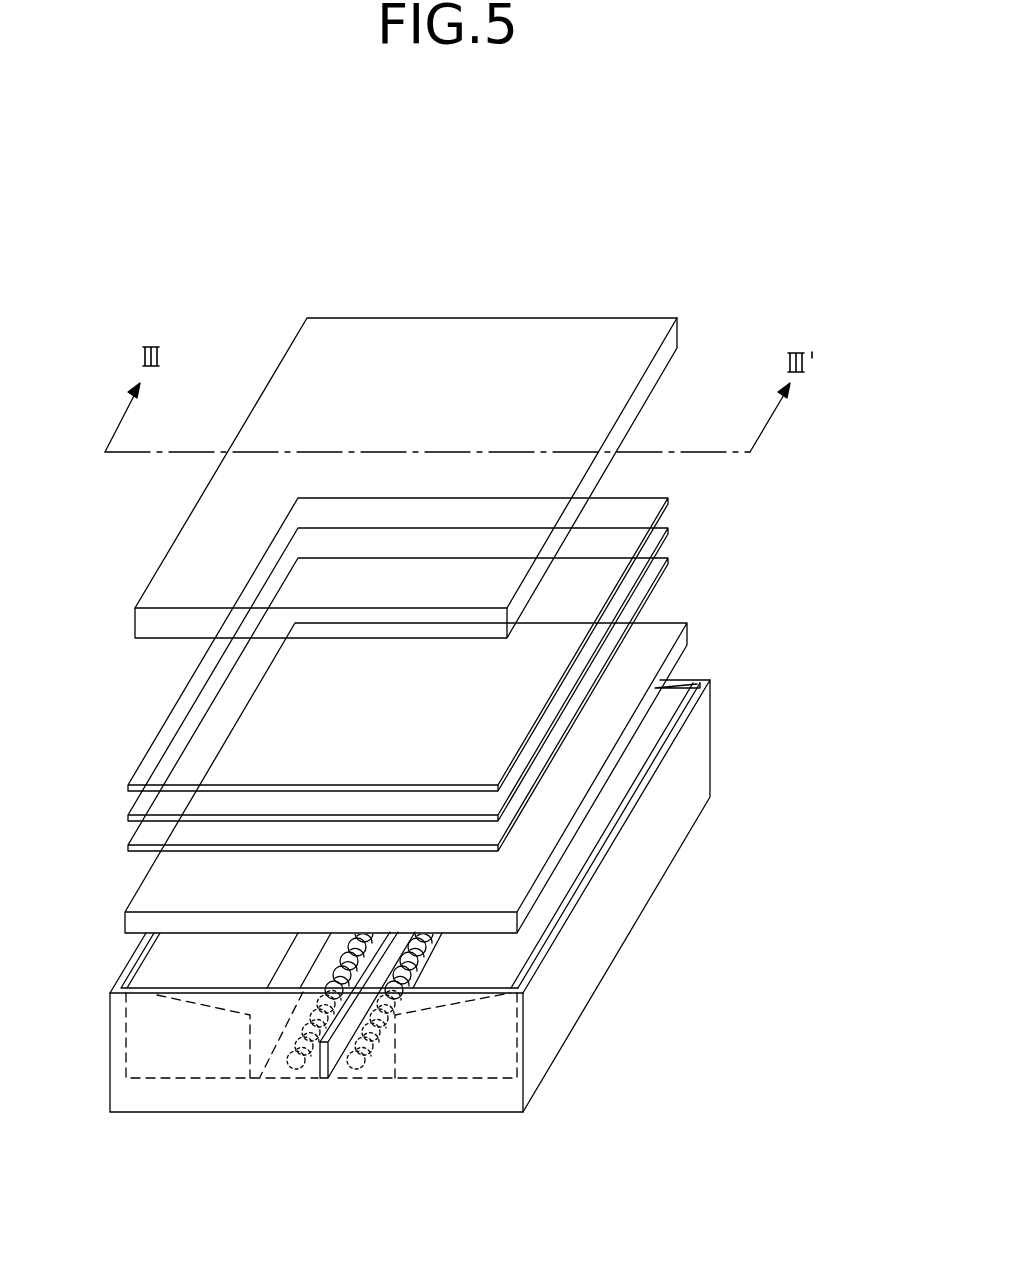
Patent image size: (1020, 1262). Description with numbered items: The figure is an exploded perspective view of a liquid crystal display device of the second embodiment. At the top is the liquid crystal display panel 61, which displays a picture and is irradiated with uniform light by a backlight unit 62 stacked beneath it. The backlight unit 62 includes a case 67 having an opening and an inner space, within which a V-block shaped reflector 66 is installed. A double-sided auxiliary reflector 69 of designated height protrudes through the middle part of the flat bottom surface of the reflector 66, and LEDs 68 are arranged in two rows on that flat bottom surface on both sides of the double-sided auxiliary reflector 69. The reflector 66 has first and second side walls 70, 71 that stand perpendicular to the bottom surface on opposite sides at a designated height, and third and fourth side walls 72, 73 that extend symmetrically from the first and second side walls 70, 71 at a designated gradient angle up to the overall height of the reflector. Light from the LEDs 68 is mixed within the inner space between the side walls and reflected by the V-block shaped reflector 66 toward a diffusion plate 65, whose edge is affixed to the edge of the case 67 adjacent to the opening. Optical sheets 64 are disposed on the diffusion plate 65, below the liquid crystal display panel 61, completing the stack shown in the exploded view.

The liquid crystal display panel 61 is at (665, 350).
The backlight unit 62 is at (823, 468).
The optical sheets 64 is at (683, 493).
The diffusion plate 65 is at (690, 632).
The V-block shaped reflector 66 is at (470, 1050).
The case 67 is at (638, 867).
The LEDs 68 is at (363, 1067).
The double-sided auxiliary reflector 69 is at (322, 1078).
The first side wall 70 is at (252, 1052).
The second side wall 71 is at (393, 1063).
The third side wall 72 is at (488, 977).
The fourth side wall 73 is at (183, 975).